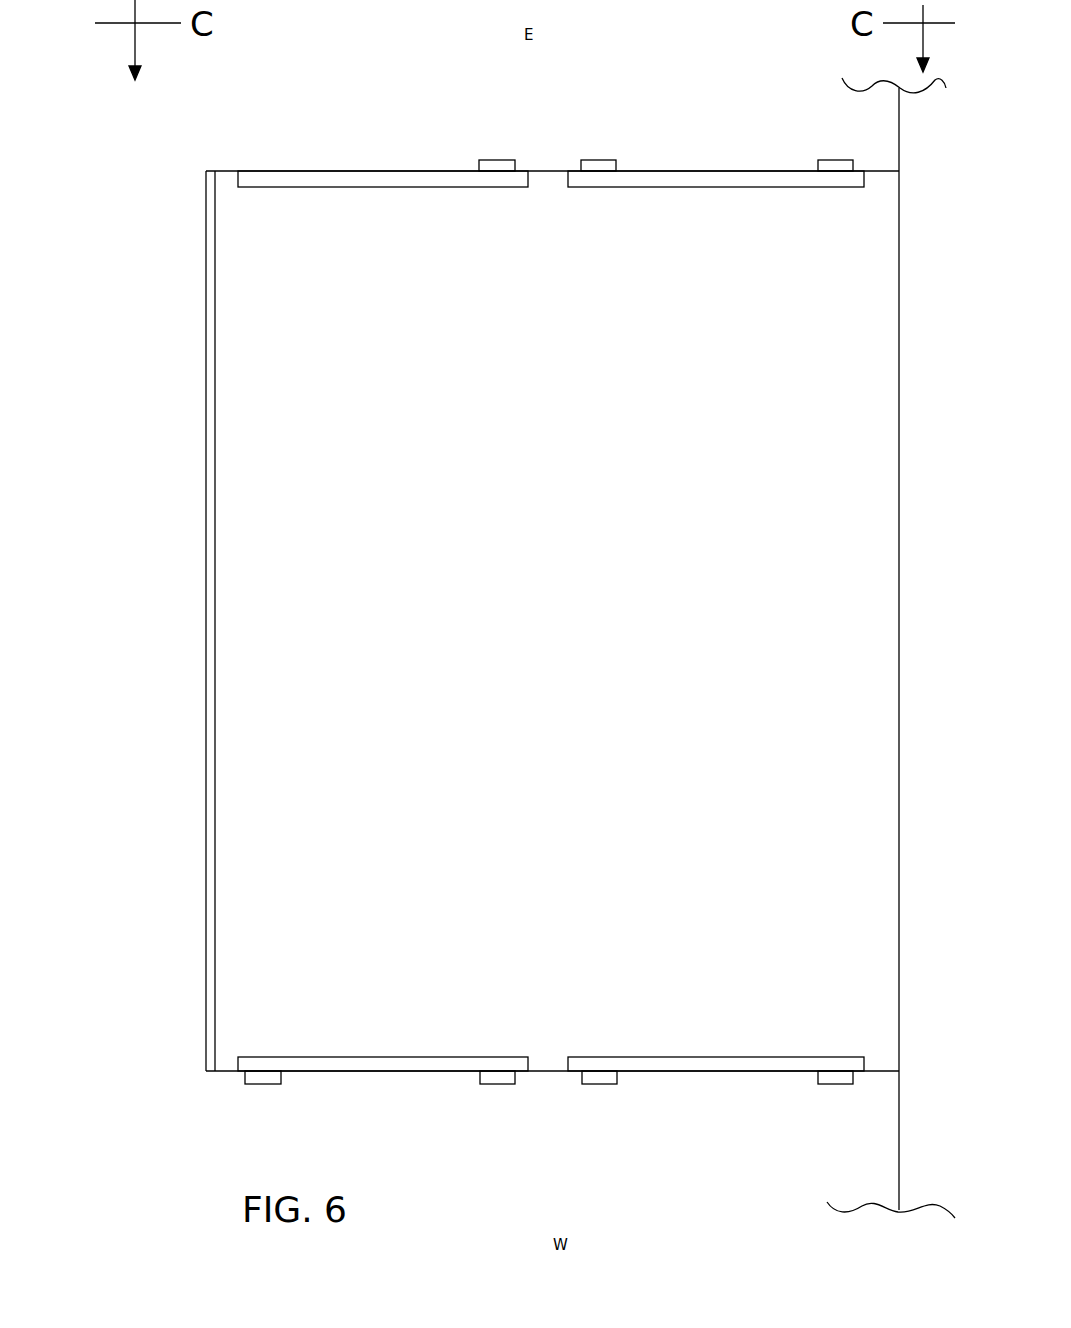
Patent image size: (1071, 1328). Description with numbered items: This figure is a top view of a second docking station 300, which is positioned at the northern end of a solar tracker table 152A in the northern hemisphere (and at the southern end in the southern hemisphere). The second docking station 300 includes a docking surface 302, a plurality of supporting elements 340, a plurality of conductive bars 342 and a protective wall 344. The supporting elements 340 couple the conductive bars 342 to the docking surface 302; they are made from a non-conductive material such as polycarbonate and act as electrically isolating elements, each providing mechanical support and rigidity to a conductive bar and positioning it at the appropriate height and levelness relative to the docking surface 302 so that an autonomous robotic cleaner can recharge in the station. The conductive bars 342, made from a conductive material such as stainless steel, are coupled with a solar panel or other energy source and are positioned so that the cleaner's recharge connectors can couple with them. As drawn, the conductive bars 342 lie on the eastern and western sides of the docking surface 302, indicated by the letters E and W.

The second docking station 300 is at (168, 390).
The docking surface 302 is at (505, 587).
The supporting elements 340 is at (265, 164).
The conductive bars 342 is at (392, 187).
The protective wall 344 is at (210, 507).
The solar tracker table 152A is at (931, 455).